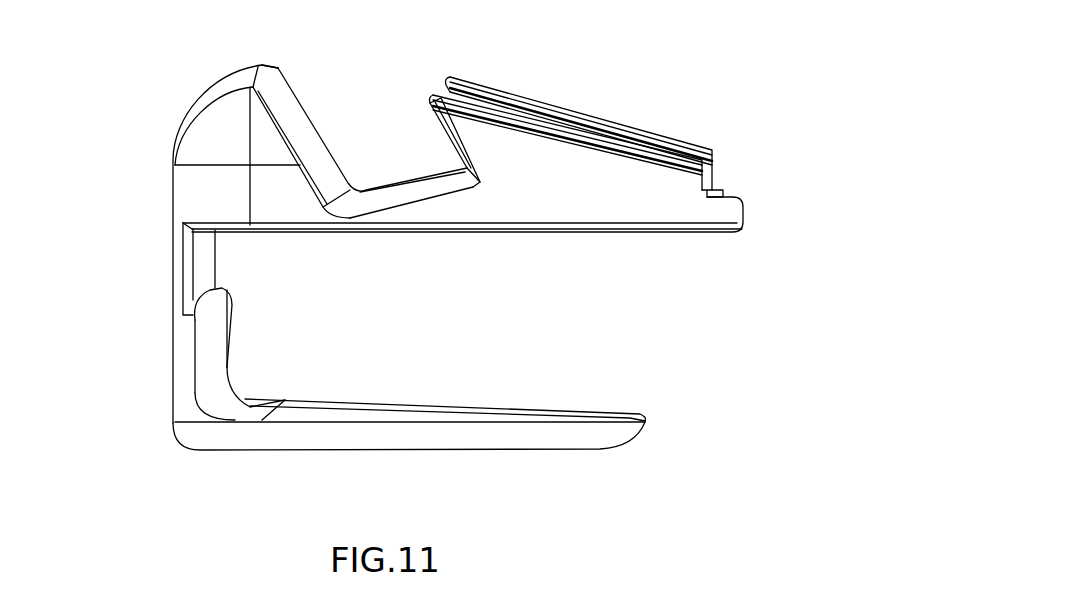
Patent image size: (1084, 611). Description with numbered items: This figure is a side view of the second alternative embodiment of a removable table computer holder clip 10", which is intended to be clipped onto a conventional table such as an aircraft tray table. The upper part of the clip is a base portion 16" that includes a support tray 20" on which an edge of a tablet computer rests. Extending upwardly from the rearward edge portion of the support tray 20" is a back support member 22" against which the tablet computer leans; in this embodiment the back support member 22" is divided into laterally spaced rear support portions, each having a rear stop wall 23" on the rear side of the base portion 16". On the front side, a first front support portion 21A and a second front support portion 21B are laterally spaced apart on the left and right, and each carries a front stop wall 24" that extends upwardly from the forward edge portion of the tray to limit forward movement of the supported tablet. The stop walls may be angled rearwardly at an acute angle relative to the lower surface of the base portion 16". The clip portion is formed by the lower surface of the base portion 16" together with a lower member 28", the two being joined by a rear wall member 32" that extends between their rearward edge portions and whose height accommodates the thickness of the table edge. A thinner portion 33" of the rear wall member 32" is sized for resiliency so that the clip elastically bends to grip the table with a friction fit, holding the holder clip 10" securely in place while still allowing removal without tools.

The removable table computer holder clip 10 is at (774, 113).
The base portion 16 is at (582, 197).
The support tray 20 is at (403, 192).
The first front support portion 21A is at (630, 137).
The second front support portion 21B is at (537, 103).
The back support member 22 is at (283, 75).
The rear stop wall 23 is at (300, 130).
The front stop wall 24 is at (432, 128).
The lower member 28 is at (510, 418).
The rear wall member 32 is at (170, 278).
The thinner portion 33 is at (207, 260).